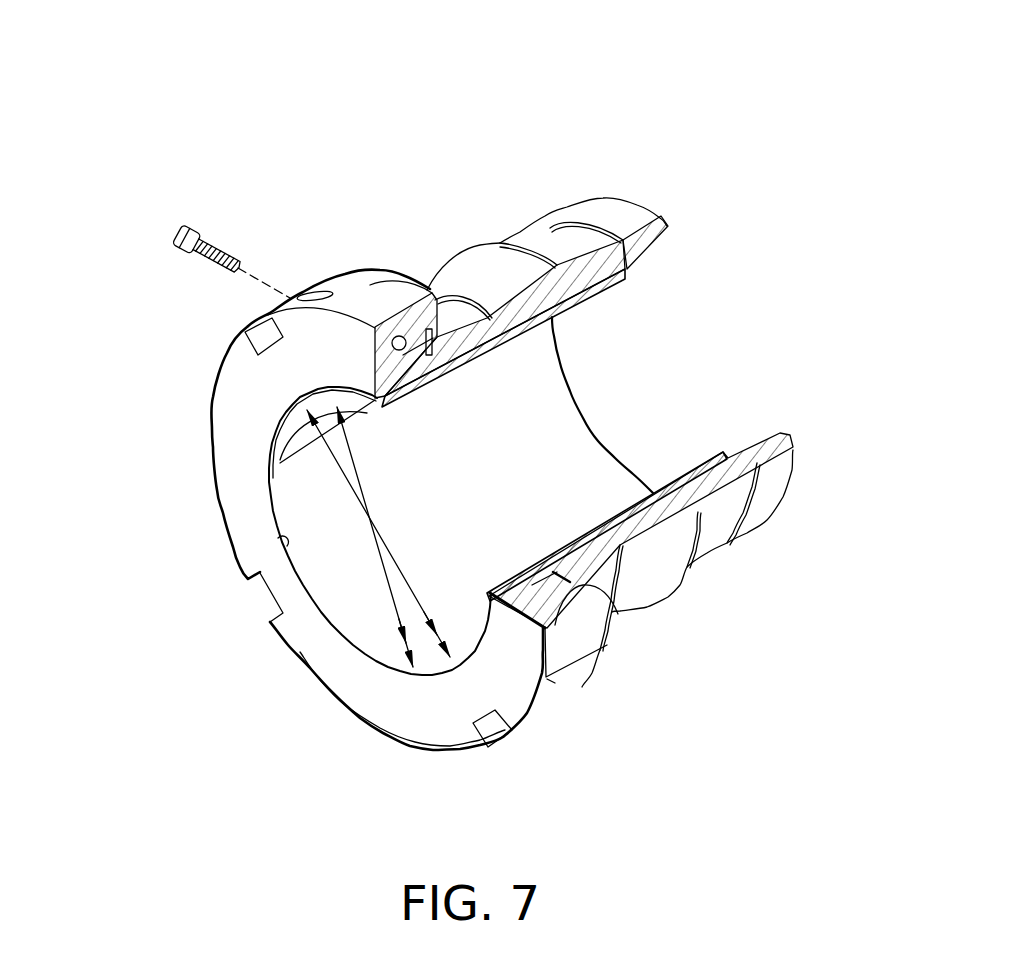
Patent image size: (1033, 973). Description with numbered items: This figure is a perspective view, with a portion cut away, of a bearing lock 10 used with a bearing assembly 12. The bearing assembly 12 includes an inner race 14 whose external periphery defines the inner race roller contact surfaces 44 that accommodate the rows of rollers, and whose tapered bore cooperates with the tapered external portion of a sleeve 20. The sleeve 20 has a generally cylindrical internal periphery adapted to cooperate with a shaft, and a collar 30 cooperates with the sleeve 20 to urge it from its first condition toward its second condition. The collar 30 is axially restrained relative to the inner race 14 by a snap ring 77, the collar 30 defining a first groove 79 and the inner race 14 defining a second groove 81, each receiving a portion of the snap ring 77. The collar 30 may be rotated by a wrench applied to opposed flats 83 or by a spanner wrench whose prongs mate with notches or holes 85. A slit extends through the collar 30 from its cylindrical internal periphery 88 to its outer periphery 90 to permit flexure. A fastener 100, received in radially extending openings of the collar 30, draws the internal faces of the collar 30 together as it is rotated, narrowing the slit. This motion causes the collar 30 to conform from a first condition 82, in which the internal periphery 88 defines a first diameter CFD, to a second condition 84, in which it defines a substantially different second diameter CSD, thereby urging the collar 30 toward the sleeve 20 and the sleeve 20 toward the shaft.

The bearing lock 10 is at (360, 153).
The bearing assembly 12 is at (222, 92).
The inner race 14 is at (677, 218).
The sleeve 20 is at (627, 275).
The collar 30 is at (213, 358).
The inner race roller contact surfaces 44 is at (523, 244).
The snap ring 77 is at (593, 610).
The first groove 79 is at (600, 637).
The second groove 81 is at (613, 613).
The first condition 82 is at (270, 513).
The opposed flats 83 is at (568, 647).
The second condition 84 is at (297, 443).
The notches or holes 85 is at (507, 743).
The cylindrical internal periphery 88 is at (287, 544).
The outer periphery 90 is at (210, 492).
The fastener 100 is at (218, 247).
The second diameter CSD is at (358, 463).
The first diameter CFD is at (383, 555).